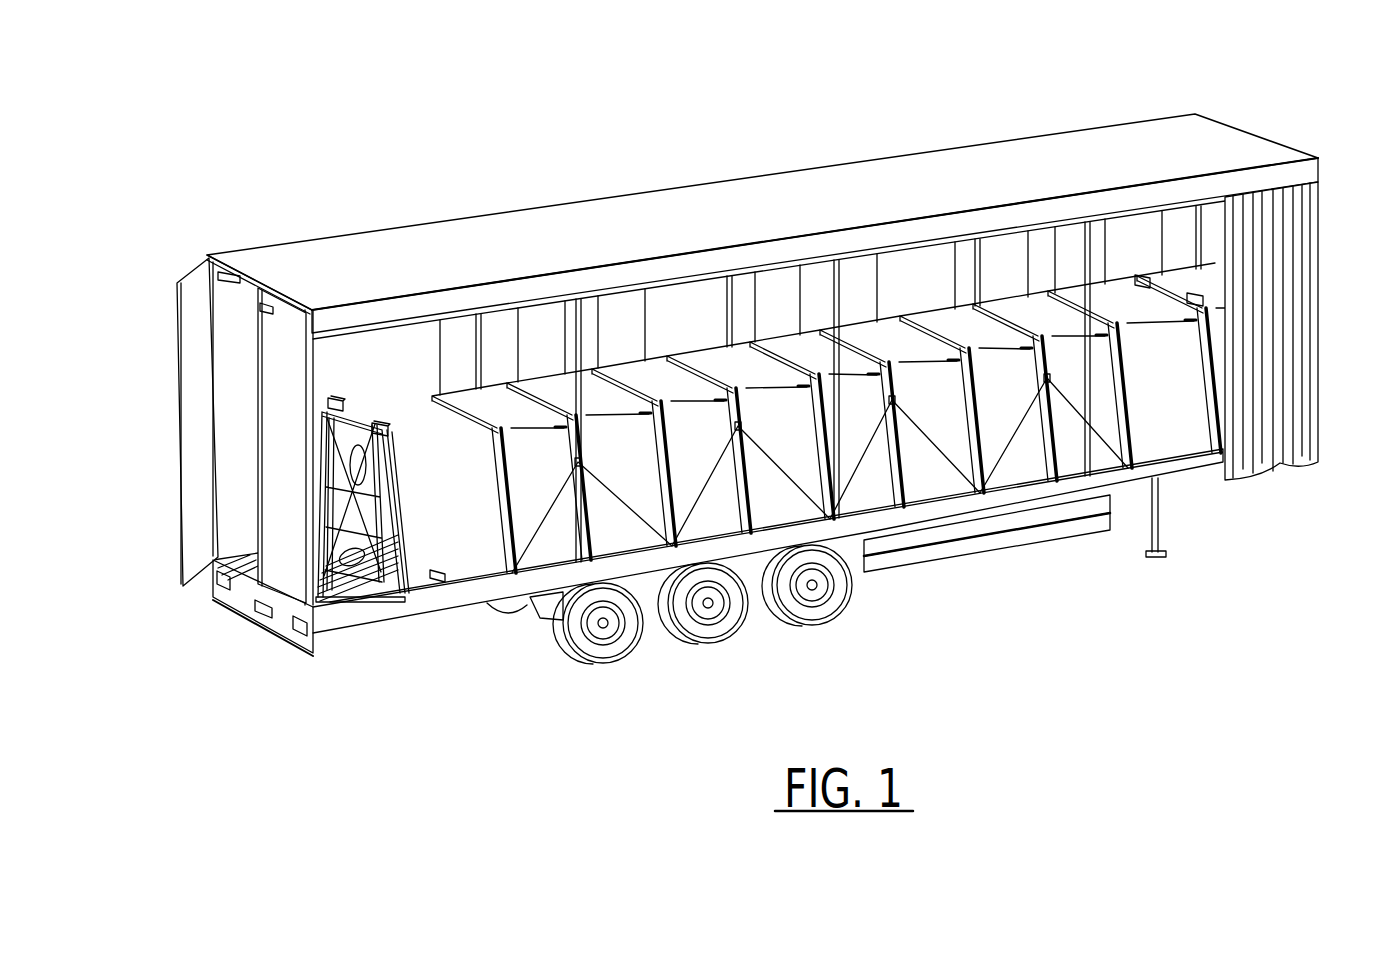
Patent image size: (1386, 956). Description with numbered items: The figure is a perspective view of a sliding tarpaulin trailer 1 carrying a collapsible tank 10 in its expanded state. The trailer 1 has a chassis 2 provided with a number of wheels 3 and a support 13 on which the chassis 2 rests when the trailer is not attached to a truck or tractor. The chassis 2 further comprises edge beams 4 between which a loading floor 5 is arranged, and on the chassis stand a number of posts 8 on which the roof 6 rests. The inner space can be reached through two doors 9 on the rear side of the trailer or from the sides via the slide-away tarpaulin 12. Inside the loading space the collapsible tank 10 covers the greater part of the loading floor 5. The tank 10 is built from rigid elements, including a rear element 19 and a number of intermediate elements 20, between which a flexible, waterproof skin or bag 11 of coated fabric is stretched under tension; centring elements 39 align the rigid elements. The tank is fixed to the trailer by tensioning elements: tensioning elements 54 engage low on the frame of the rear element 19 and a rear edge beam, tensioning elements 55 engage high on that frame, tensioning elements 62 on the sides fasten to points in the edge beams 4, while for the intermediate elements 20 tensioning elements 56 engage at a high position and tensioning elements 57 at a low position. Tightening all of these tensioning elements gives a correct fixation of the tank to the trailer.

The sliding tarpaulin trailer 1 is at (345, 107).
The chassis 2 is at (548, 670).
The wheels 3 is at (617, 650).
The edge beams 4 is at (466, 600).
The loading floor 5 is at (333, 605).
The roof 6 is at (502, 233).
The posts 8 is at (313, 355).
The doors 9 is at (188, 370).
The collapsible tank 10 is at (929, 499).
The flexible skin or bag 11 is at (681, 488).
The slide-away tarpaulin 12 is at (1280, 440).
The support 13 is at (1158, 522).
The rear element 19 is at (361, 535).
The intermediate elements 20 is at (480, 445).
The centring elements 39 is at (1190, 365).
The tensioning elements 54 is at (383, 597).
The tensioning elements 55 is at (328, 507).
The tensioning elements 56 is at (646, 514).
The tensioning elements 57 is at (512, 527).
The tensioning elements 62 is at (437, 577).